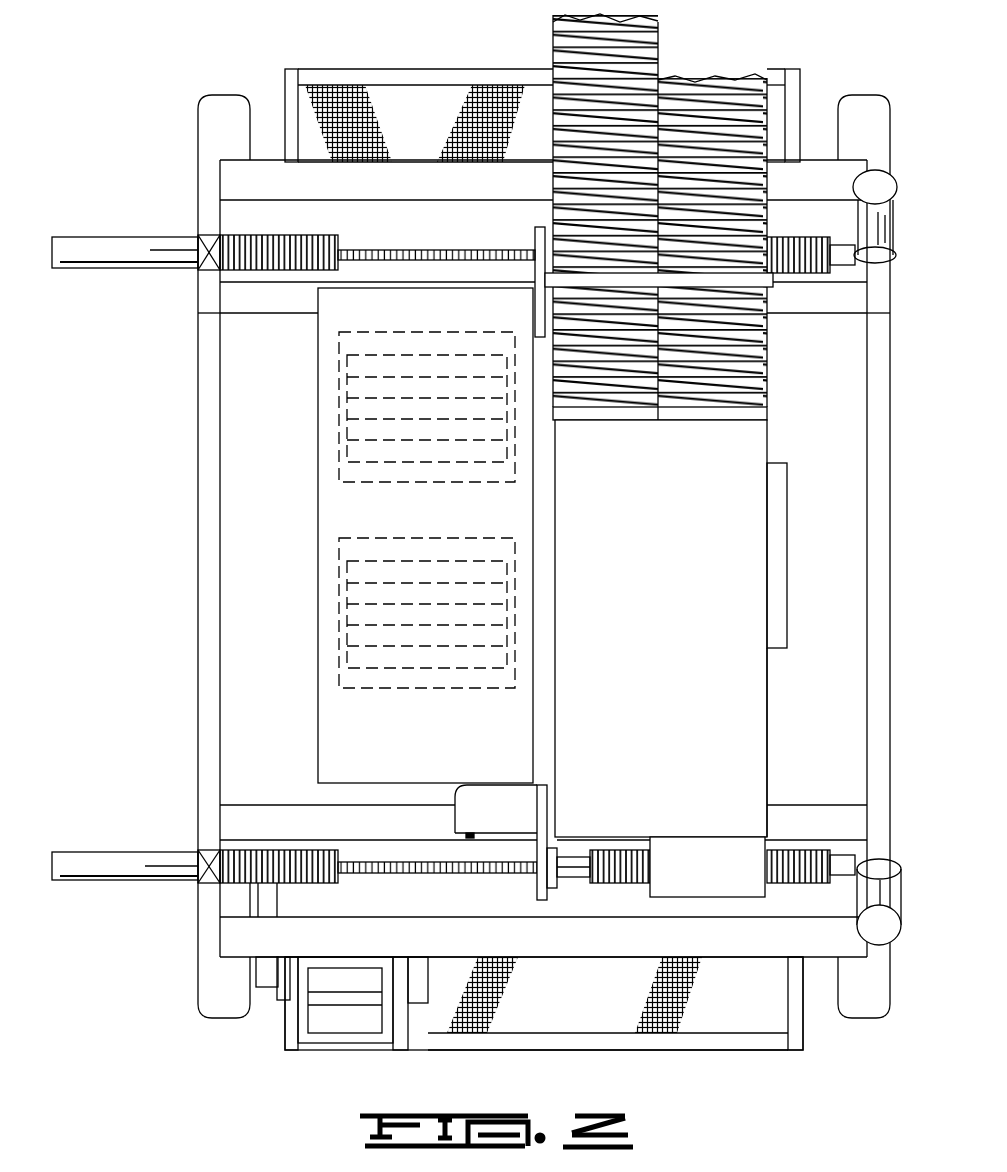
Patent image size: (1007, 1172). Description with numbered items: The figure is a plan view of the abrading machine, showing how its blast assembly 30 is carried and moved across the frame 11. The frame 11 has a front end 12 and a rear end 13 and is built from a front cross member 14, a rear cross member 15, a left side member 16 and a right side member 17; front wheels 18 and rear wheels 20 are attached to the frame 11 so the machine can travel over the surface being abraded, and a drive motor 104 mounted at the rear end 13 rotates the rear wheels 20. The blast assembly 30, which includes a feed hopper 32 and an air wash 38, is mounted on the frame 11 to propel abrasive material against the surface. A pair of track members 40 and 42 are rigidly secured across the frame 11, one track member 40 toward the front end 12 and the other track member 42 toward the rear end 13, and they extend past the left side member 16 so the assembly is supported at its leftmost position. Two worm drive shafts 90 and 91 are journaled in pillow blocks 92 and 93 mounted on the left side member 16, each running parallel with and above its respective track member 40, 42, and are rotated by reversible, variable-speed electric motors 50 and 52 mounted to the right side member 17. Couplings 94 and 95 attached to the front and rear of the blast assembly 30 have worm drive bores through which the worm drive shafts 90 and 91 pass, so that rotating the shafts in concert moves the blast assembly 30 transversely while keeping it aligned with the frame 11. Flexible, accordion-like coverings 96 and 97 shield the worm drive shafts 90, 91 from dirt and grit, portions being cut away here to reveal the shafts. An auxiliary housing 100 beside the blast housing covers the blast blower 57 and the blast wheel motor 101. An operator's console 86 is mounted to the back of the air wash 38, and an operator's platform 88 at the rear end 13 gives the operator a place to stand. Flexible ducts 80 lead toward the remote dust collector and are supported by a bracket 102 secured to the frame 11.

The frame 11 is at (194, 354).
The front end 12 is at (405, 70).
The rear end 13 is at (470, 1048).
The front cross member 14 is at (272, 170).
The rear cross member 15 is at (240, 940).
The left side member 16 is at (198, 505).
The right side member 17 is at (867, 605).
The front wheels 18 is at (215, 95).
The rear wheels 20 is at (218, 1018).
The blast assembly 30 is at (771, 430).
The feed hopper 32 is at (788, 543).
The air wash 38 is at (771, 720).
The track member 40 is at (100, 237).
The track member 42 is at (160, 852).
The electric motor 50 is at (870, 183).
The electric motor 52 is at (875, 930).
The blast blower 57 is at (340, 420).
The flexible ducts 80 is at (553, 38).
The operator's console 86 is at (705, 870).
The operator's platform 88 is at (720, 1010).
The worm drive shaft 90 is at (445, 250).
The worm drive shaft 91 is at (415, 860).
The pillow block 92 is at (208, 240).
The pillow block 93 is at (208, 852).
The coupling 94 is at (533, 237).
The coupling 95 is at (537, 885).
The accordion-like covering 96 is at (292, 273).
The accordion-like covering 97 is at (250, 850).
The auxiliary housing 100 is at (335, 517).
The blast wheel motor 101 is at (340, 633).
The bracket 102 is at (705, 280).
The drive motor 104 is at (333, 1030).